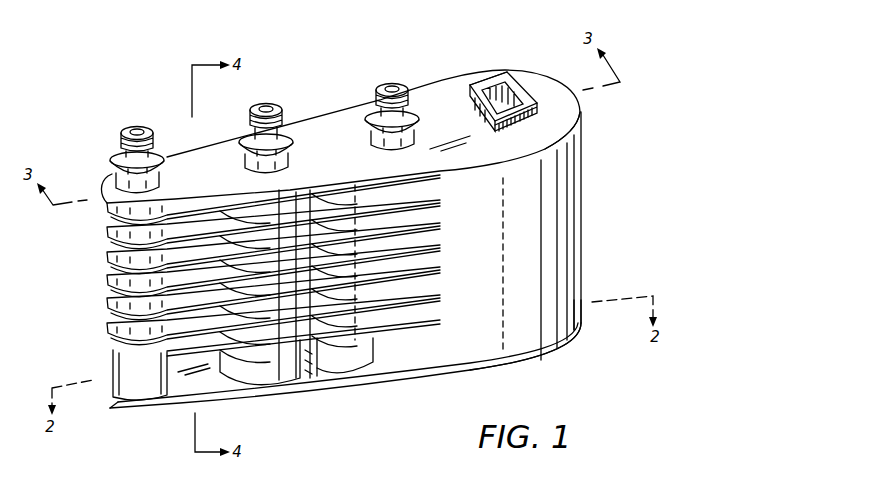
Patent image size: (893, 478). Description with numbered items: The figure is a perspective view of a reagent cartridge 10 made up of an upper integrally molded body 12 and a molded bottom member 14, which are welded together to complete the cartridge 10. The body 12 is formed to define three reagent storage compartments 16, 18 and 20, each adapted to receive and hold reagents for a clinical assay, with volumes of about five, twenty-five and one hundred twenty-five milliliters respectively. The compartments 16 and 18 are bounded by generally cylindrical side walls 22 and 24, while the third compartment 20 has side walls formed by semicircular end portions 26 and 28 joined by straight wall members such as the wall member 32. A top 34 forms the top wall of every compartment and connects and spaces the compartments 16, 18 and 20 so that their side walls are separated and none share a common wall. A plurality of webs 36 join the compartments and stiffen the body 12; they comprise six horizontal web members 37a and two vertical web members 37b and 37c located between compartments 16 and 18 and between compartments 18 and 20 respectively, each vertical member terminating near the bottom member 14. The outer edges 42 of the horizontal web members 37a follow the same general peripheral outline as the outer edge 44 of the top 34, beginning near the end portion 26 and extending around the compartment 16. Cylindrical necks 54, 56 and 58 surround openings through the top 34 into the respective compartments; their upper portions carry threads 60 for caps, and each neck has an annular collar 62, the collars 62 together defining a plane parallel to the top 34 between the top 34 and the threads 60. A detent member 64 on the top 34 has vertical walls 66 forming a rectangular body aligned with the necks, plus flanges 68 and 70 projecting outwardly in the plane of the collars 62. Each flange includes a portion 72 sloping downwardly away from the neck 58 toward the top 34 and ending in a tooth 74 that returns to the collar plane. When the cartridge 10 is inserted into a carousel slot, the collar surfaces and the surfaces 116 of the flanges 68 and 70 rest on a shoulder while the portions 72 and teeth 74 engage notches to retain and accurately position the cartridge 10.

The reagent cartridge 10 is at (485, 60).
The upper integrally molded body 12 is at (587, 160).
The molded bottom member 14 is at (568, 369).
The reagent storage compartment 16 is at (112, 404).
The reagent storage compartment 18 is at (270, 366).
The reagent storage compartment 20 is at (548, 336).
The cylindrical side wall 22 is at (144, 390).
The cylindrical side wall 24 is at (247, 377).
The semicircular end portion 26 is at (343, 360).
The semicircular end portion 28 is at (581, 320).
The straight wall member 32 is at (467, 360).
The top 34 is at (560, 87).
The webs 36 is at (110, 333).
The horizontal web members 37a is at (438, 270).
The vertical web member 37b is at (108, 236).
The vertical web member 37c is at (318, 192).
The outer edges of horizontal web members 42 is at (105, 298).
The outer edge of the top 44 is at (108, 196).
The cylindrical neck 54 is at (153, 148).
The cylindrical neck 56 is at (280, 132).
The cylindrical neck 58 is at (402, 112).
The threads 60 is at (123, 137).
The annular collars 62 is at (112, 160).
The detent member 64 is at (485, 120).
The vertical walls 66 is at (475, 108).
The flange 68 is at (470, 86).
The flange 70 is at (496, 136).
The sloping portion 72 is at (502, 135).
The tooth 74 is at (527, 135).
The surfaces of flanges 116 is at (583, 108).